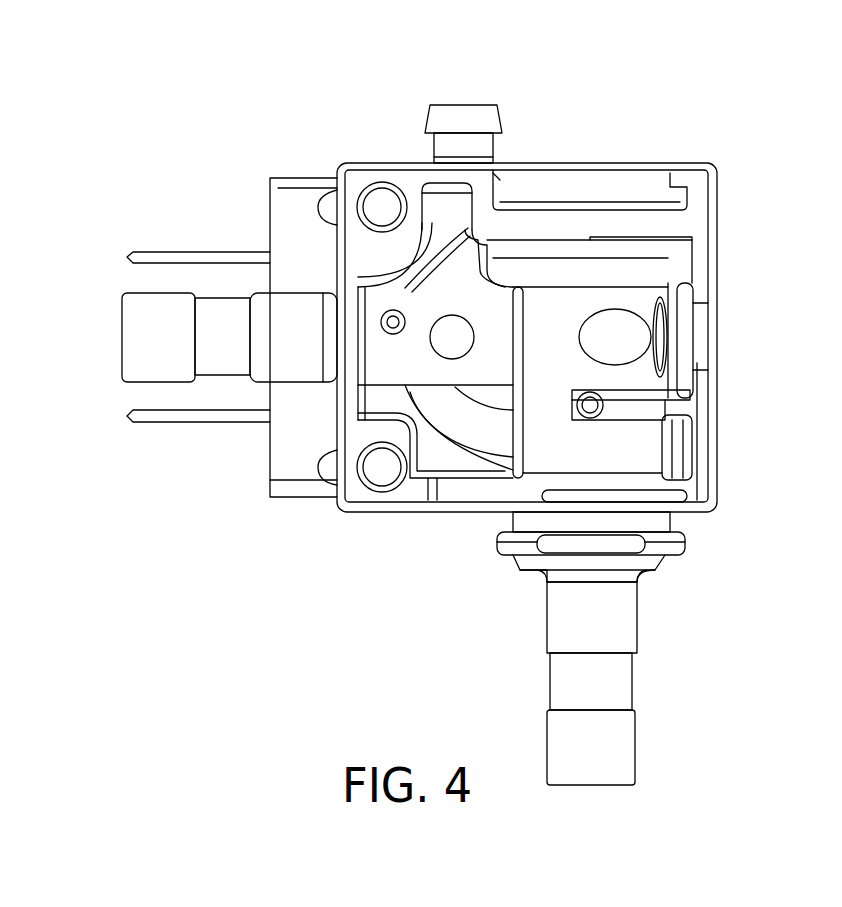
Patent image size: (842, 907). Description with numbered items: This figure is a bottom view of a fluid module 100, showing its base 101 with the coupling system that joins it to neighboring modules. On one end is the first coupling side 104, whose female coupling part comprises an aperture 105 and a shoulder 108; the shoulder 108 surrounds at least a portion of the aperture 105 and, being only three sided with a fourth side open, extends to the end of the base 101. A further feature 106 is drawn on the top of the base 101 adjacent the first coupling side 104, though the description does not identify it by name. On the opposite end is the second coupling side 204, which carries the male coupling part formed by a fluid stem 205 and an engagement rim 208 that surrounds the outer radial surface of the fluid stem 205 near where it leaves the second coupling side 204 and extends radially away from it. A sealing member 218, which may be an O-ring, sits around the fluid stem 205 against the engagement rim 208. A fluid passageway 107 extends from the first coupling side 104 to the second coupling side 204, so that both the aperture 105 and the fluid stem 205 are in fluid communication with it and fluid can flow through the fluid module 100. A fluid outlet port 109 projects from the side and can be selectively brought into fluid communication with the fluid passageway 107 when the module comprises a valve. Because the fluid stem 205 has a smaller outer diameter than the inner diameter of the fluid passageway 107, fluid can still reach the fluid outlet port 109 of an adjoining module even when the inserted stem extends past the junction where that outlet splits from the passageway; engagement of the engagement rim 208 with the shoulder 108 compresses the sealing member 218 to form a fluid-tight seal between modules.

The fluid module 100 is at (244, 92).
The base 101 is at (720, 262).
The first coupling side 104 is at (388, 162).
The aperture 105 is at (600, 150).
The top port 106 is at (470, 112).
The fluid passageway 107 is at (650, 450).
The shoulder 108 is at (672, 178).
The fluid outlet port 109 is at (133, 362).
The second coupling side 204 is at (390, 512).
The fluid stem 205 is at (625, 757).
The engagement rim 208 is at (680, 540).
The sealing member 218 is at (655, 568).